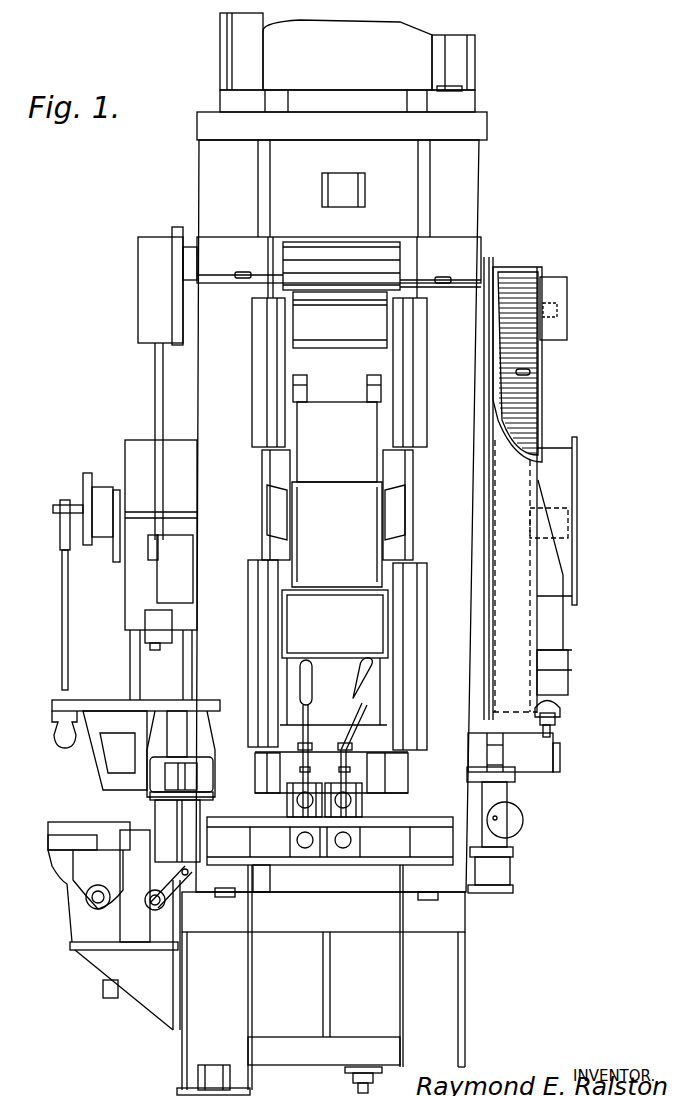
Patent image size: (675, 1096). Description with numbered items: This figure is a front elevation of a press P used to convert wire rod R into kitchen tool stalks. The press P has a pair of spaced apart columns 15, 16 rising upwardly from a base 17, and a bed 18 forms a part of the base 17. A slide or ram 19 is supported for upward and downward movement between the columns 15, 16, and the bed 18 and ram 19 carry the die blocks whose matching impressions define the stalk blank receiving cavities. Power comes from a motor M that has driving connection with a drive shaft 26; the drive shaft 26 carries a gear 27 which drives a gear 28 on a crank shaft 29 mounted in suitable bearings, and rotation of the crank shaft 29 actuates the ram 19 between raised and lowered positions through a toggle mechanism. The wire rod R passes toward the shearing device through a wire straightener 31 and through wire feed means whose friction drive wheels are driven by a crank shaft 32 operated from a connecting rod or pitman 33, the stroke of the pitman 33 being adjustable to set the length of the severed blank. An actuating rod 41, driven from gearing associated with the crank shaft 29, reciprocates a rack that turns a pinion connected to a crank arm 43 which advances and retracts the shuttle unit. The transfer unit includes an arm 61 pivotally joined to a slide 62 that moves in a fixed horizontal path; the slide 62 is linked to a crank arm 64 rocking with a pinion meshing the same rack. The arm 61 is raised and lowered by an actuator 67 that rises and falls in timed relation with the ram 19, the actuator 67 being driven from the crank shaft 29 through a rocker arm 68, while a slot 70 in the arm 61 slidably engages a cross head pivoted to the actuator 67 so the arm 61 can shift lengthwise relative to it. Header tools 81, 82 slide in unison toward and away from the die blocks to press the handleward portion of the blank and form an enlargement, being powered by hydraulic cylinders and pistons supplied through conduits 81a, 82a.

The motor M is at (243, 37).
The press P is at (95, 232).
The column 15 is at (213, 400).
The column 16 is at (460, 395).
The base 17 is at (437, 984).
The bed 18 is at (328, 922).
The slide or ram 19 is at (343, 639).
The drive shaft 26 is at (543, 305).
The gear 27 is at (513, 290).
The gear 28 is at (522, 373).
The crank shaft 29 is at (555, 510).
The wire straightener 31 is at (165, 775).
The crank shaft 32 is at (195, 700).
The connecting rod or pitman 33 is at (60, 637).
The actuating rod 41 is at (135, 668).
The crank arm 43 is at (178, 890).
The arm 61 is at (510, 828).
The slide 62 is at (60, 840).
The crank arm 64 is at (90, 873).
The actuator 67 is at (497, 800).
The rocker arm 68 is at (548, 738).
The slot 70 is at (488, 835).
The header tool 81 is at (295, 840).
The header tool 82 is at (356, 840).
The conduit 81a is at (302, 775).
The conduit 82a is at (345, 775).
The wire rod R is at (175, 775).